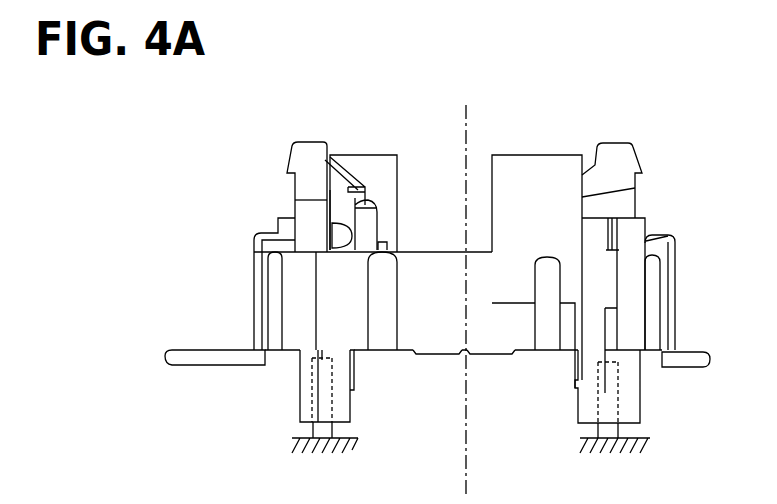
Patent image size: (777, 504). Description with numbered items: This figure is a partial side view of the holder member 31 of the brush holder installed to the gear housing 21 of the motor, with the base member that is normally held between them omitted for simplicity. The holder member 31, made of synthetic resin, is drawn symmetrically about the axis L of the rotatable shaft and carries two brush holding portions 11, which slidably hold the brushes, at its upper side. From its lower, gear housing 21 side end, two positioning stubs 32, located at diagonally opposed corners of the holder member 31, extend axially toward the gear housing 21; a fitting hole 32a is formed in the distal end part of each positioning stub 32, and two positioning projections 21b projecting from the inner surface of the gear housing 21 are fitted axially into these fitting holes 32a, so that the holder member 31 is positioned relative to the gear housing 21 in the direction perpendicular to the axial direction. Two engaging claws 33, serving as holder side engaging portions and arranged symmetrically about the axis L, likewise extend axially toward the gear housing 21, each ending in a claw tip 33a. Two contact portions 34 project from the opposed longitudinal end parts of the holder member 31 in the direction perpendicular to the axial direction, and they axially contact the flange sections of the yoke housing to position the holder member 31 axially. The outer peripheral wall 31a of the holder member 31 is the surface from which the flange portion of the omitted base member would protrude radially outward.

The brush holding portion 11 is at (341, 206).
The gear housing 21 is at (300, 438).
The positioning projection 21b is at (332, 438).
The holder member 31 is at (668, 123).
The outer peripheral wall 31a is at (462, 333).
The positioning stub 32 is at (300, 398).
The fitting hole 32a is at (333, 360).
The engaging claw 33 is at (358, 356).
The claw tip 33a is at (577, 388).
The contact portion 34 is at (200, 355).
The axis L is at (466, 123).